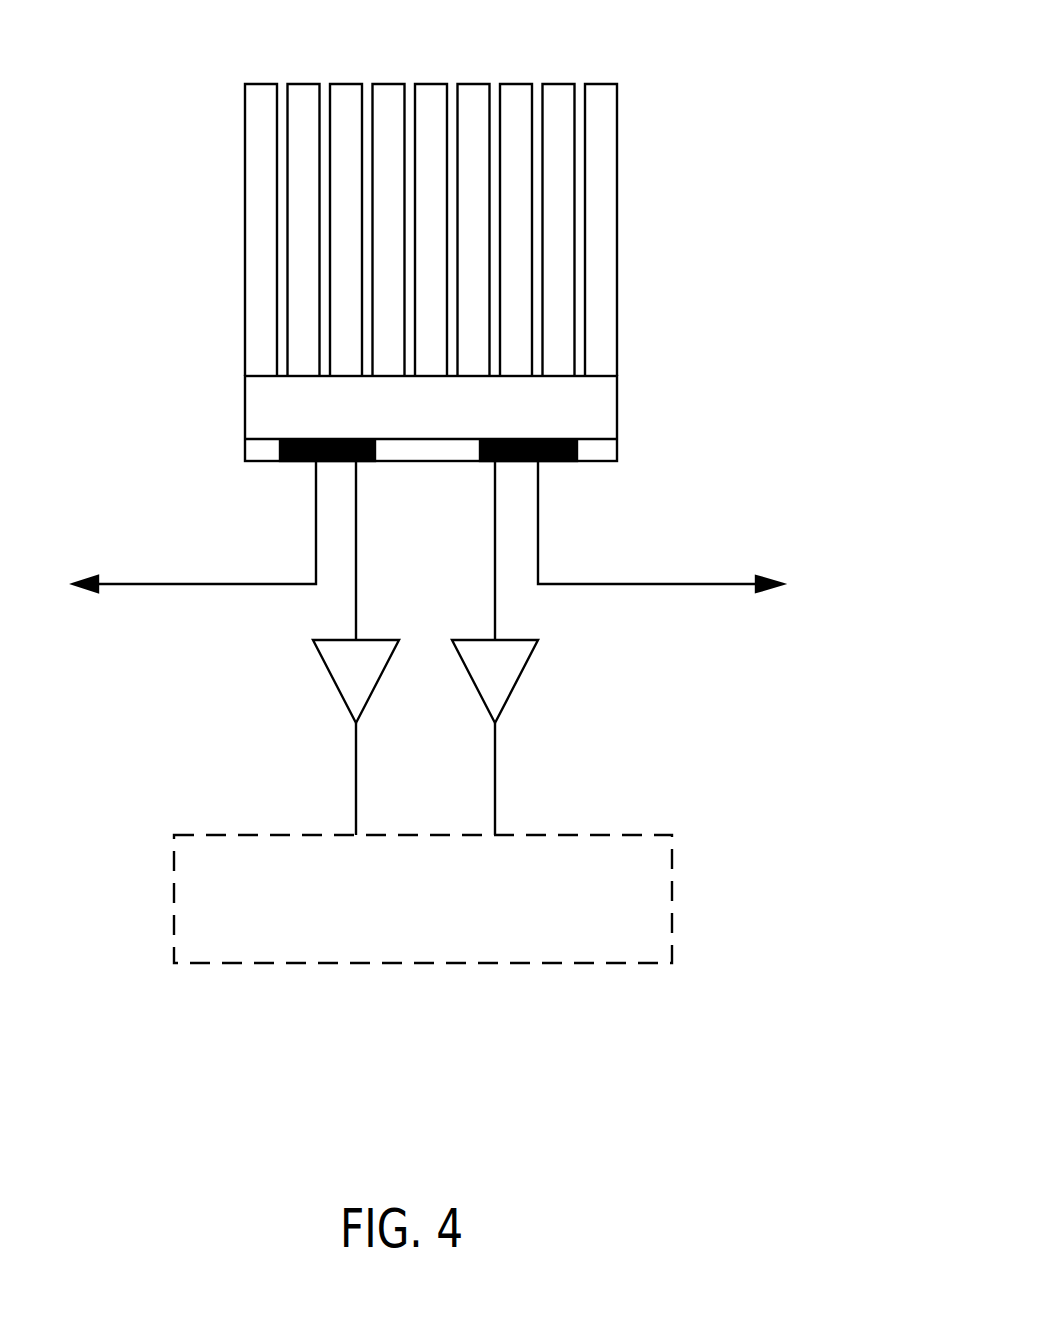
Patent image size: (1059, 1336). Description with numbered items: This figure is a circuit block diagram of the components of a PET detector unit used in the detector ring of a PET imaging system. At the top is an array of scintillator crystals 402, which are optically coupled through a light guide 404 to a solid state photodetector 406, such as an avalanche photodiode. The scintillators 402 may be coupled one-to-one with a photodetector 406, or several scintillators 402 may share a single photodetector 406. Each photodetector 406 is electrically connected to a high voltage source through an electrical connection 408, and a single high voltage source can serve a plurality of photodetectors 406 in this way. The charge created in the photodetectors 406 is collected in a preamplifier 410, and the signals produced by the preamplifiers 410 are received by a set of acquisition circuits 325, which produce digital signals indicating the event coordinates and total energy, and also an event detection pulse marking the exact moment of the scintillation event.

The scintillator crystals 402 is at (618, 130).
The light guide 404 is at (244, 409).
The solid state photodetector 406 is at (548, 438).
The electrical connection 408 is at (727, 584).
The preamplifier 410 is at (523, 673).
The acquisition circuits 325 is at (565, 963).